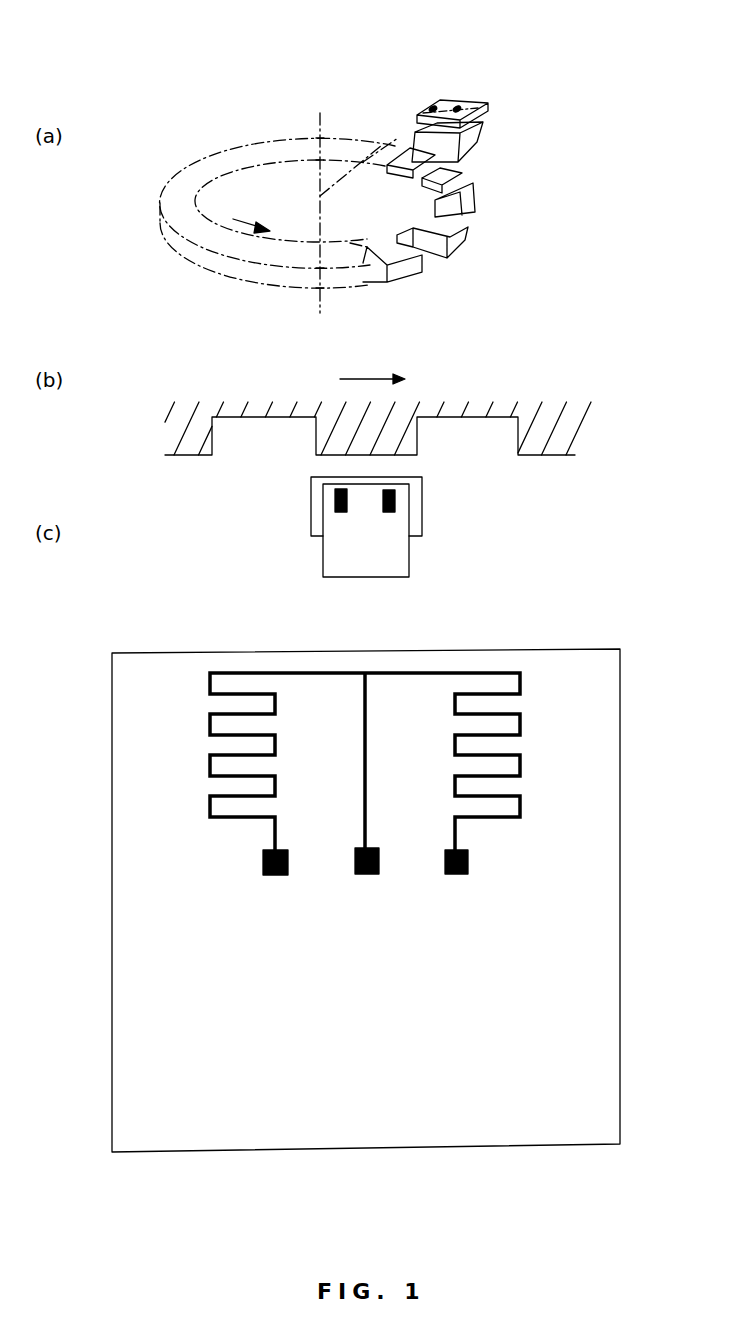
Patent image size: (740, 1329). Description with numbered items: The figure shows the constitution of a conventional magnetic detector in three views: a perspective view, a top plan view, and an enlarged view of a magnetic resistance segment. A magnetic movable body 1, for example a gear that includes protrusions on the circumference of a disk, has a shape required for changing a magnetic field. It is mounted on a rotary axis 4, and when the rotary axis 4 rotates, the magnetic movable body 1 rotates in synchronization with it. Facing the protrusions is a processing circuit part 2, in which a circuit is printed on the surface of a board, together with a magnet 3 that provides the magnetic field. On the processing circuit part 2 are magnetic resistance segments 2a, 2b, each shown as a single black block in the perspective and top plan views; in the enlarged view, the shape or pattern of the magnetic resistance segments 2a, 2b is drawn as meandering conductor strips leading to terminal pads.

The magnetic movable body 1 is at (403, 270).
The processing circuit part 2 is at (473, 98).
The magnetic resistance segment 2a is at (458, 110).
The magnetic resistance segment 2b is at (435, 110).
The magnet 3 is at (480, 143).
The rotary axis 4 is at (318, 118).